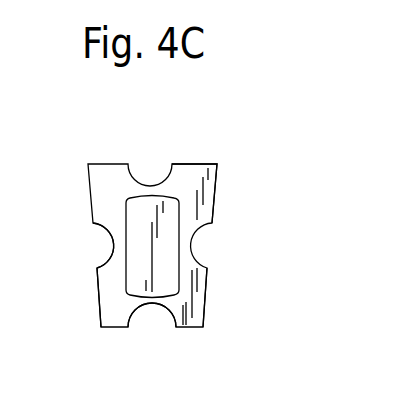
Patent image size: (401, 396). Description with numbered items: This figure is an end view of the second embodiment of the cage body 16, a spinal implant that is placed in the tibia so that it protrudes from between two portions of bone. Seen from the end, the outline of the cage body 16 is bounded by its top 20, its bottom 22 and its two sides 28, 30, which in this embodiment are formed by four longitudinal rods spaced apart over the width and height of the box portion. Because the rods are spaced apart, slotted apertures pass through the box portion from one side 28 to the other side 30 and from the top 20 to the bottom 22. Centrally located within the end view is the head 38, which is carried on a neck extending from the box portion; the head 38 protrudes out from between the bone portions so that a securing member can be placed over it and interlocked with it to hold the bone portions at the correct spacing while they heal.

The cage body 16 is at (90, 148).
The top 20 is at (196, 164).
The bottom 22 is at (178, 327).
The side 28 is at (205, 313).
The side 30 is at (97, 297).
The head 38 is at (126, 277).